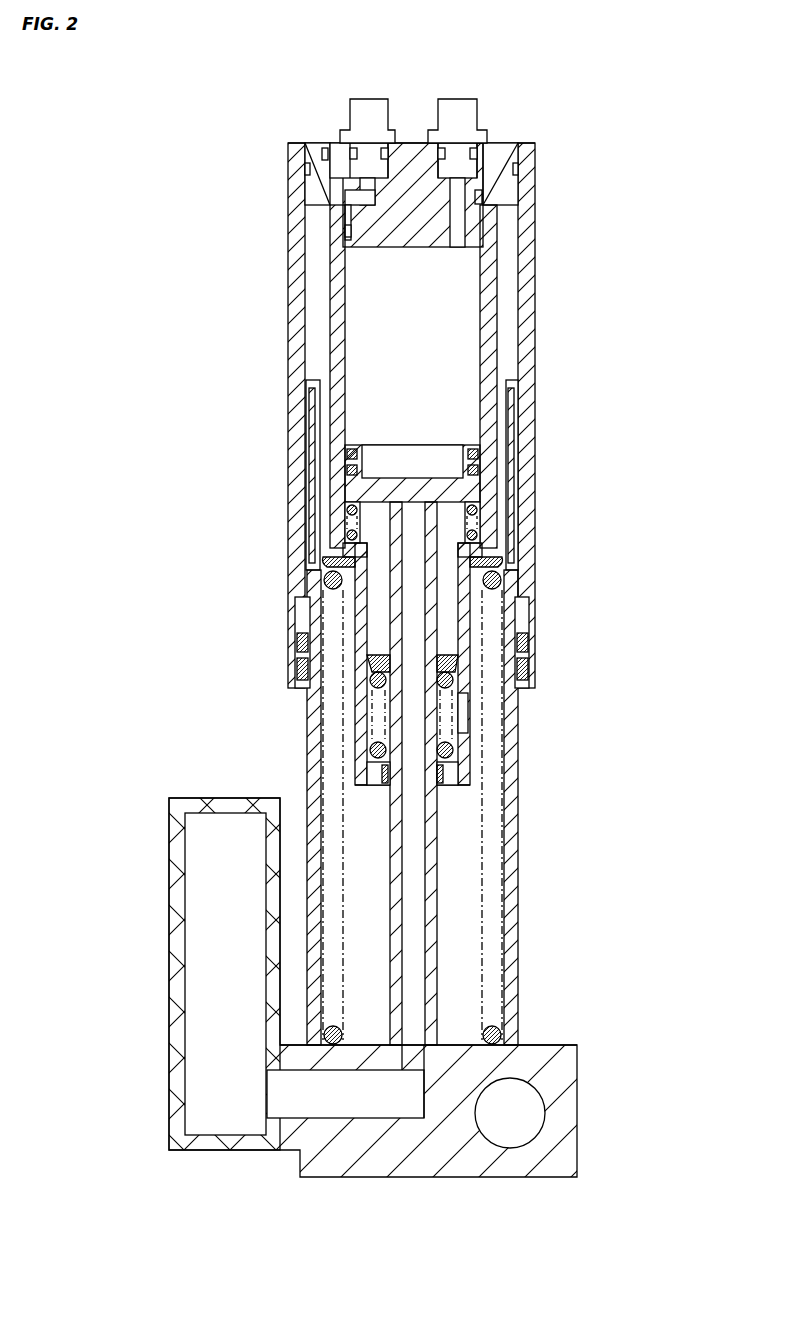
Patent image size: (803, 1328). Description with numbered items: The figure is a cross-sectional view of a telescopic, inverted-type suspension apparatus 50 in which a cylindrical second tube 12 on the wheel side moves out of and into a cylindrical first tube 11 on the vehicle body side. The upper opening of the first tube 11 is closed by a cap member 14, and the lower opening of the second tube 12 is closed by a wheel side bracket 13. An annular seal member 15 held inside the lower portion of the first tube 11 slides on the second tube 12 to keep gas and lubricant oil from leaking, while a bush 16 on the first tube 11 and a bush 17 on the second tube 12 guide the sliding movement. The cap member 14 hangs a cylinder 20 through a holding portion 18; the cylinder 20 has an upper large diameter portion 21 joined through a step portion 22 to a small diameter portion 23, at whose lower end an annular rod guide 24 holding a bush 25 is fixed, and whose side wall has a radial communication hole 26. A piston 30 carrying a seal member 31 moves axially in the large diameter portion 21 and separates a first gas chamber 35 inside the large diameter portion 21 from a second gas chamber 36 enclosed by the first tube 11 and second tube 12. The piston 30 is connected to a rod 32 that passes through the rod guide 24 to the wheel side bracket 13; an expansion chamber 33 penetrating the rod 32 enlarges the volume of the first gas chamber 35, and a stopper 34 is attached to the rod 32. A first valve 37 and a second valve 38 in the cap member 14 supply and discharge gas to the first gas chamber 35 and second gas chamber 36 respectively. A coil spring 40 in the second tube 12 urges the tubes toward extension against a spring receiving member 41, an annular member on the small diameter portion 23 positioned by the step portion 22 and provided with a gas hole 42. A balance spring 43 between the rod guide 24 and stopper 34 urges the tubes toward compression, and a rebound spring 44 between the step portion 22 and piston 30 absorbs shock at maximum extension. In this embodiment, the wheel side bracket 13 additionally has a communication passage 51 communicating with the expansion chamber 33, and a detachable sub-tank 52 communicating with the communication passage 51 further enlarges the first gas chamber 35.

The first tube 11 is at (530, 310).
The second tube 12 is at (512, 810).
The wheel side bracket 13 is at (567, 1135).
The cap member 14 is at (406, 230).
The annular seal member 15 is at (527, 640).
The bush 16 is at (528, 605).
The bush 17 is at (515, 410).
The holding portion 18 is at (515, 165).
The cylinder 20 is at (320, 252).
The large diameter portion 21 is at (337, 297).
The step portion 22 is at (338, 553).
The small diameter portion 23 is at (360, 745).
The rod guide 24 is at (372, 790).
The bush 25 is at (445, 770).
The communication hole 26 is at (465, 700).
The piston 30 is at (470, 441).
The seal member 31 is at (482, 475).
The rod 32 is at (432, 860).
The expansion chamber 33 is at (412, 925).
The stopper 34 is at (370, 660).
The first gas chamber 35 is at (370, 350).
The second gas chamber 36 is at (370, 885).
The first valve 37 is at (463, 115).
The second valve 38 is at (355, 115).
The coil spring 40 is at (500, 1040).
The spring receiving member 41 is at (492, 578).
The gas hole 42 is at (495, 560).
The balance spring 43 is at (378, 700).
The rebound spring 44 is at (350, 518).
The suspension apparatus 50 is at (657, 152).
The communication passage 51 is at (340, 1107).
The sub-tank 52 is at (190, 960).